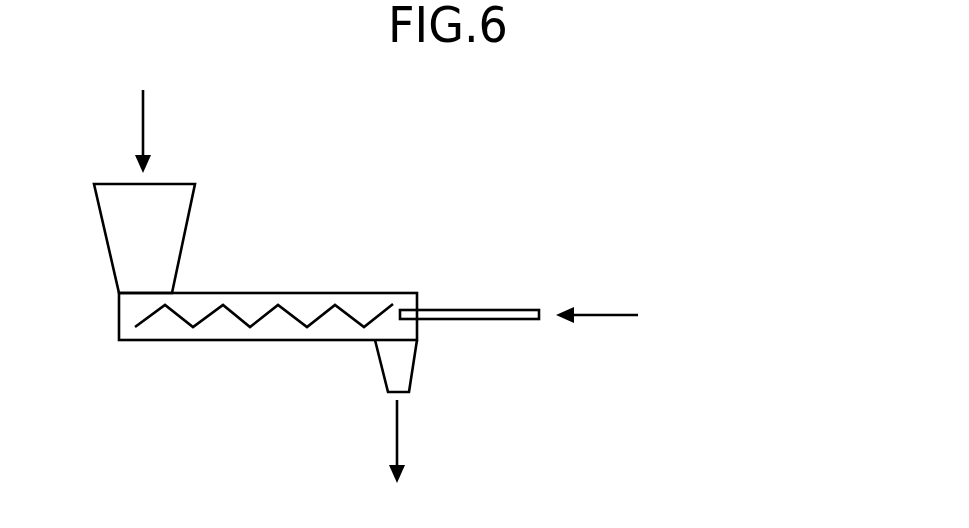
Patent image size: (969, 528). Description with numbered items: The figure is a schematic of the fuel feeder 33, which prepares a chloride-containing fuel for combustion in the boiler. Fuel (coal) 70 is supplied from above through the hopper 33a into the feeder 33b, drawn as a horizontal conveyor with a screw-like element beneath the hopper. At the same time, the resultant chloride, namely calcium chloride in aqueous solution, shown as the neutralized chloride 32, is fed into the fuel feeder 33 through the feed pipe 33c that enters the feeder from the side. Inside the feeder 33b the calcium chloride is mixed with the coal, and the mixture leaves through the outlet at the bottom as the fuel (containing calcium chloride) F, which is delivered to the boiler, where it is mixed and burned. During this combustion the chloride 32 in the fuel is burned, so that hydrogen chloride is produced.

The fuel (coal) 70 is at (145, 130).
The fuel feeder 33 is at (414, 208).
The hopper 33a is at (108, 246).
The feeder 33b is at (277, 292).
The feed pipe 33c is at (475, 310).
The chloride 32 is at (602, 317).
The fuel (containing calcium chloride) F is at (399, 440).